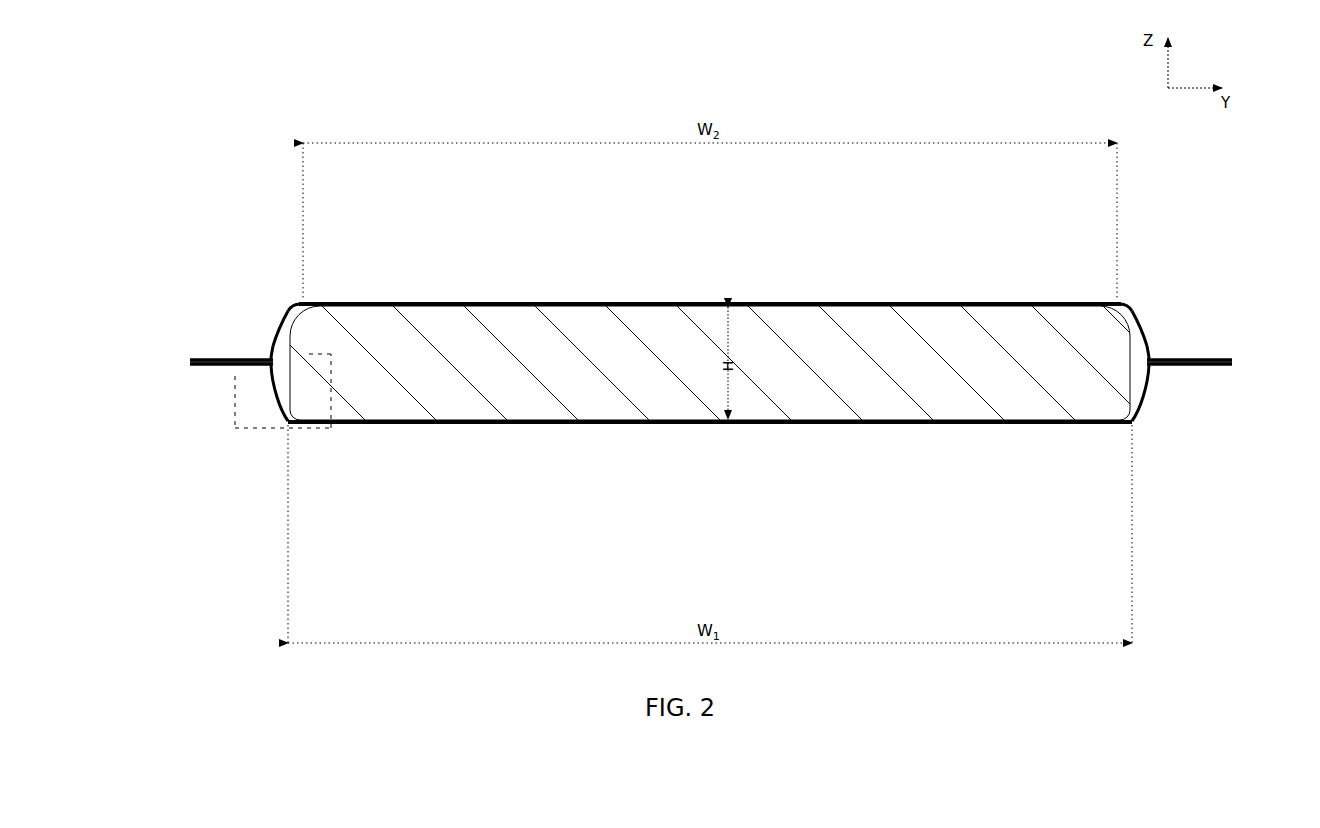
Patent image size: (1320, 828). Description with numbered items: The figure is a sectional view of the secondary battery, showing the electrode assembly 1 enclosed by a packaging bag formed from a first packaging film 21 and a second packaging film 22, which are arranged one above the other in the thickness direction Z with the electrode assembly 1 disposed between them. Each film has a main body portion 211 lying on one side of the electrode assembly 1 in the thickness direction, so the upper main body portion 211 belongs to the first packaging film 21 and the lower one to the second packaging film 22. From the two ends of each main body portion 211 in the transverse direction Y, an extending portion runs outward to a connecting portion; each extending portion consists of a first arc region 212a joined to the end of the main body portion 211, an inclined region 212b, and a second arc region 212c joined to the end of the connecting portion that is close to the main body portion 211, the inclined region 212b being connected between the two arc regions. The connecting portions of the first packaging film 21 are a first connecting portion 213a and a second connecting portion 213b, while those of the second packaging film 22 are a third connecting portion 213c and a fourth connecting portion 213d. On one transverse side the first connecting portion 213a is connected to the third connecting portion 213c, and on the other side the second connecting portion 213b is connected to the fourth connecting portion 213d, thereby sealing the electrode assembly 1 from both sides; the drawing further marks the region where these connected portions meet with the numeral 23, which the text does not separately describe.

The electrode assembly 1 is at (457, 396).
The first packaging film 21 is at (709, 264).
The second packaging film 22 is at (693, 450).
The main body portion 211 is at (632, 300).
The first arc region 212a is at (294, 306).
The inclined region 212b is at (278, 334).
The second arc region 212c is at (268, 356).
The first connecting portion 213a is at (197, 357).
The second connecting portion 213b is at (1226, 357).
The third connecting portion 213c is at (189, 370).
The fourth connecting portion 213d is at (1156, 372).
The sealed joint 23 is at (226, 370).